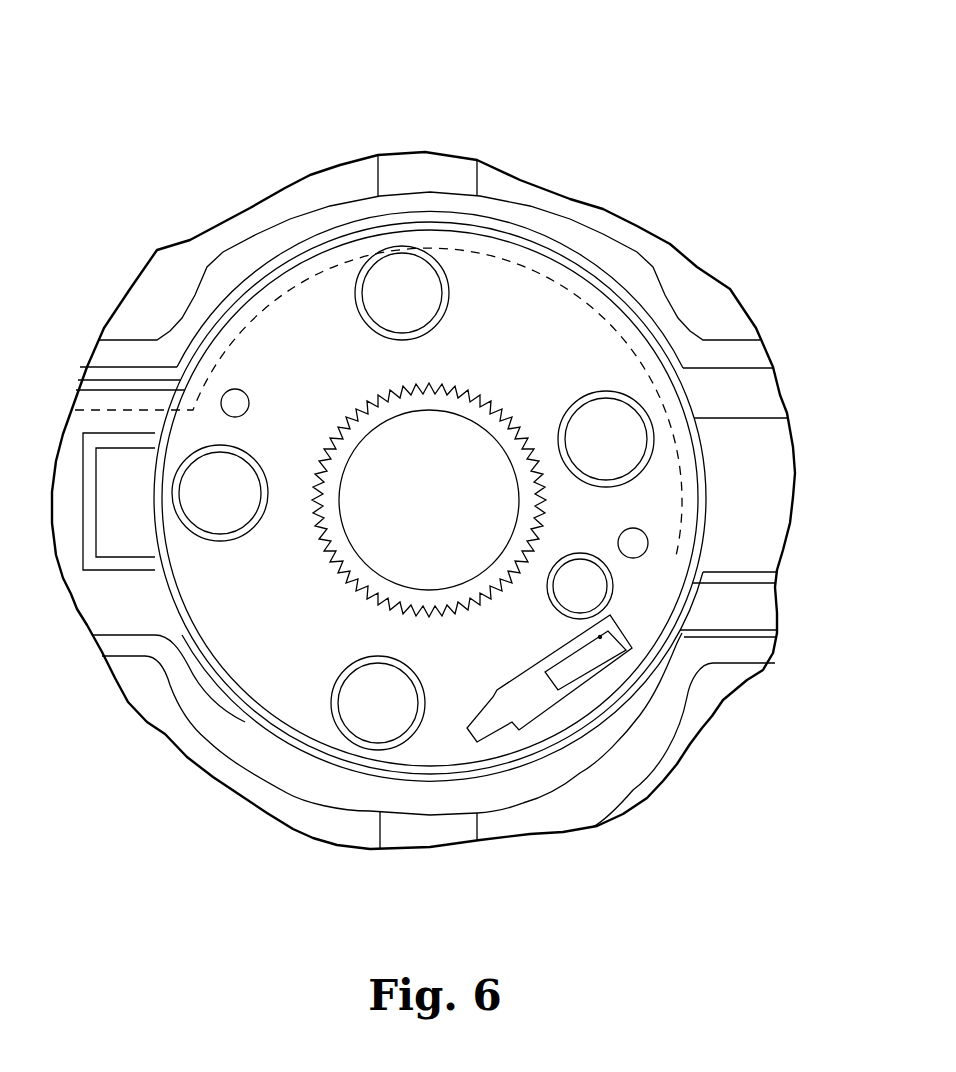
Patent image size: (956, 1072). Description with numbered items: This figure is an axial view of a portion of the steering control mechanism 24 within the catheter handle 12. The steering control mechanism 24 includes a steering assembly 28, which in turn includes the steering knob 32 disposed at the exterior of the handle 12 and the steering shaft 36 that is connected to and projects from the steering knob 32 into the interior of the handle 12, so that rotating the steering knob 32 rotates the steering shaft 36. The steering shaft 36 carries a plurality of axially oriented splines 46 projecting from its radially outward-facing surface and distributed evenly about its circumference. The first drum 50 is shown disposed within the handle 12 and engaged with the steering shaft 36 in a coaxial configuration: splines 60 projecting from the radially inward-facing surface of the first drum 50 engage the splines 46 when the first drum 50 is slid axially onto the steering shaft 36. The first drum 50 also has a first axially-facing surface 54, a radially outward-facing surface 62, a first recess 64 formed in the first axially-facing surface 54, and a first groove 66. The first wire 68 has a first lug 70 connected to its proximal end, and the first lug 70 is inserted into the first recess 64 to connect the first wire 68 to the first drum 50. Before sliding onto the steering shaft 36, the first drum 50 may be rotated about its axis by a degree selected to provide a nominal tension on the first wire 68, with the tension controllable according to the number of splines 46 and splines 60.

The handle 12 is at (201, 276).
The steering control mechanism 24 is at (684, 118).
The steering assembly 28 is at (230, 762).
The steering knob 32 is at (470, 176).
The steering shaft 36 is at (377, 392).
The splines 46 is at (350, 587).
The first drum 50 is at (371, 770).
The first axially-facing surface 54 is at (640, 487).
The splines 60 is at (352, 572).
The radially outward-facing surface 62 is at (300, 738).
The first recess 64 is at (530, 683).
The first groove 66 is at (692, 574).
The first wire 68 is at (527, 230).
The first lug 70 is at (601, 660).